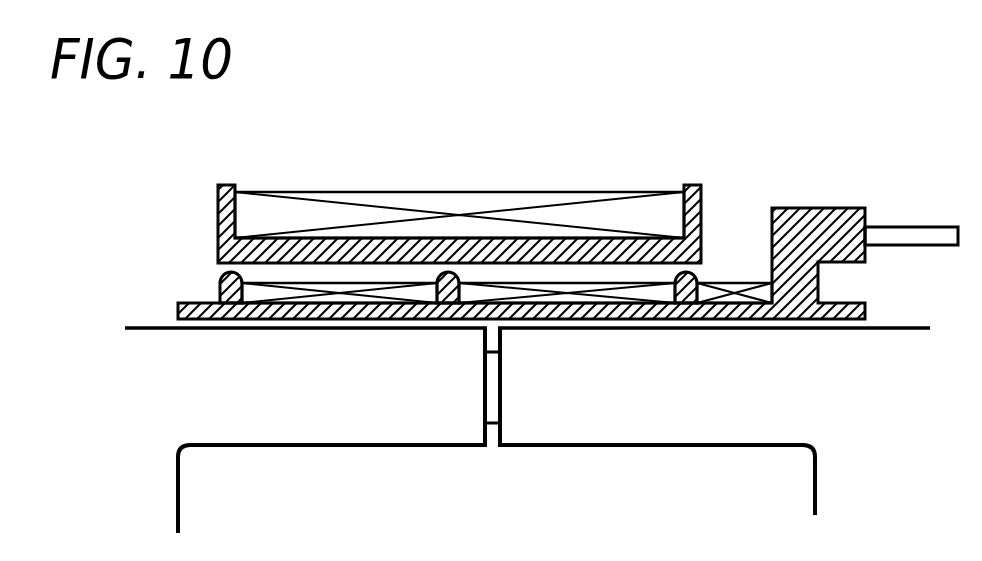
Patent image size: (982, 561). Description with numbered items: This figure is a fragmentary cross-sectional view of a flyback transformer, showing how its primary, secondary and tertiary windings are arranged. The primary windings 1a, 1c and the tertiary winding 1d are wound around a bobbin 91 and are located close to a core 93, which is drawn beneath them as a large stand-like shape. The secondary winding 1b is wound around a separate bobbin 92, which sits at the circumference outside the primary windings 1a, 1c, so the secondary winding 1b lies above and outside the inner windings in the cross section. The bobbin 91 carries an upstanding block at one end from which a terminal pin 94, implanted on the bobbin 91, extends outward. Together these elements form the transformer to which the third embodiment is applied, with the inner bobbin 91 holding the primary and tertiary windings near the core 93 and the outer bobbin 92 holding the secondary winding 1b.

The primary winding 1a is at (580, 300).
The secondary winding 1b is at (450, 203).
The primary winding 1c is at (410, 292).
The tertiary winding 1d is at (732, 300).
The bobbin 91 is at (810, 320).
The bobbin 92 is at (703, 213).
The core 93 is at (328, 407).
The terminal pin 94 is at (898, 227).